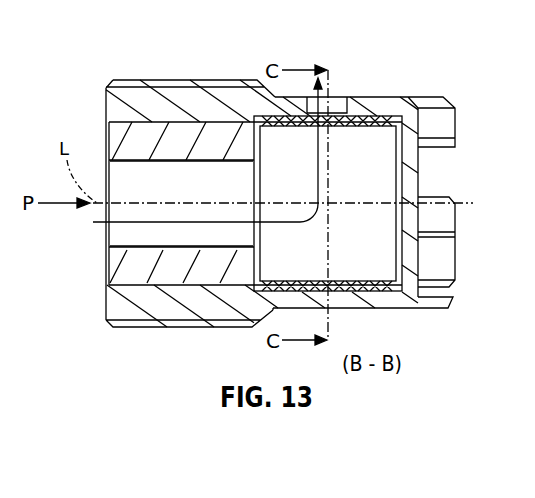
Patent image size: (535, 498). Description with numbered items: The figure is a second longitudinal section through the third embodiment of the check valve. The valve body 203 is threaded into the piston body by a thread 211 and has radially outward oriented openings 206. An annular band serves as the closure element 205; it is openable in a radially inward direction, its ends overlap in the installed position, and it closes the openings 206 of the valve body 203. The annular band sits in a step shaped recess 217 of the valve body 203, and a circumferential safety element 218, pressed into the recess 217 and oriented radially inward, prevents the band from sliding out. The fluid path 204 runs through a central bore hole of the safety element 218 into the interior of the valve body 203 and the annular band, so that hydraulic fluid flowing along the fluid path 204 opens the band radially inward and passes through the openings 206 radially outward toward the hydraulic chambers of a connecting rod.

The valve body 203 is at (383, 98).
The fluid path 204 is at (184, 222).
The closure element 205 is at (351, 128).
The openings 206 is at (337, 108).
The thread 211 is at (213, 100).
The step shaped recess 217 is at (368, 98).
The circumferential safety element 218 is at (146, 140).